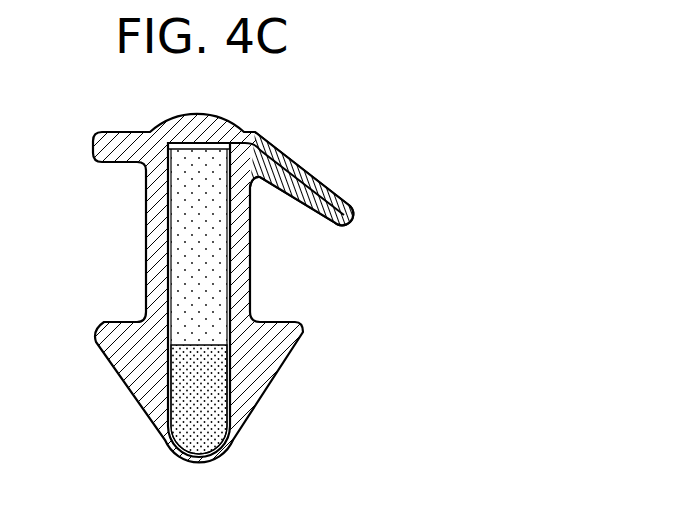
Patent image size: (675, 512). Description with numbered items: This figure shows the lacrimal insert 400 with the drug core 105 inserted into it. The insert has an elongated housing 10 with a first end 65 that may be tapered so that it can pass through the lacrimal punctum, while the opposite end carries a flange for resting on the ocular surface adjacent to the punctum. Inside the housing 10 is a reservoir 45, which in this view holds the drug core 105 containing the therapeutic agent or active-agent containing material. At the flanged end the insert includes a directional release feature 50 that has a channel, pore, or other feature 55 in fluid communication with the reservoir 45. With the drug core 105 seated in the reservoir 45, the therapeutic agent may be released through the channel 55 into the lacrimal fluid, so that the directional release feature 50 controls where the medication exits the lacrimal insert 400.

The lacrimal insert 400 is at (395, 307).
The elongated housing 10 is at (146, 243).
The reservoir 45 is at (180, 170).
The directional release feature 50 is at (328, 186).
The channel 55 is at (338, 216).
The first end 65 is at (292, 363).
The drug core 105 is at (152, 357).